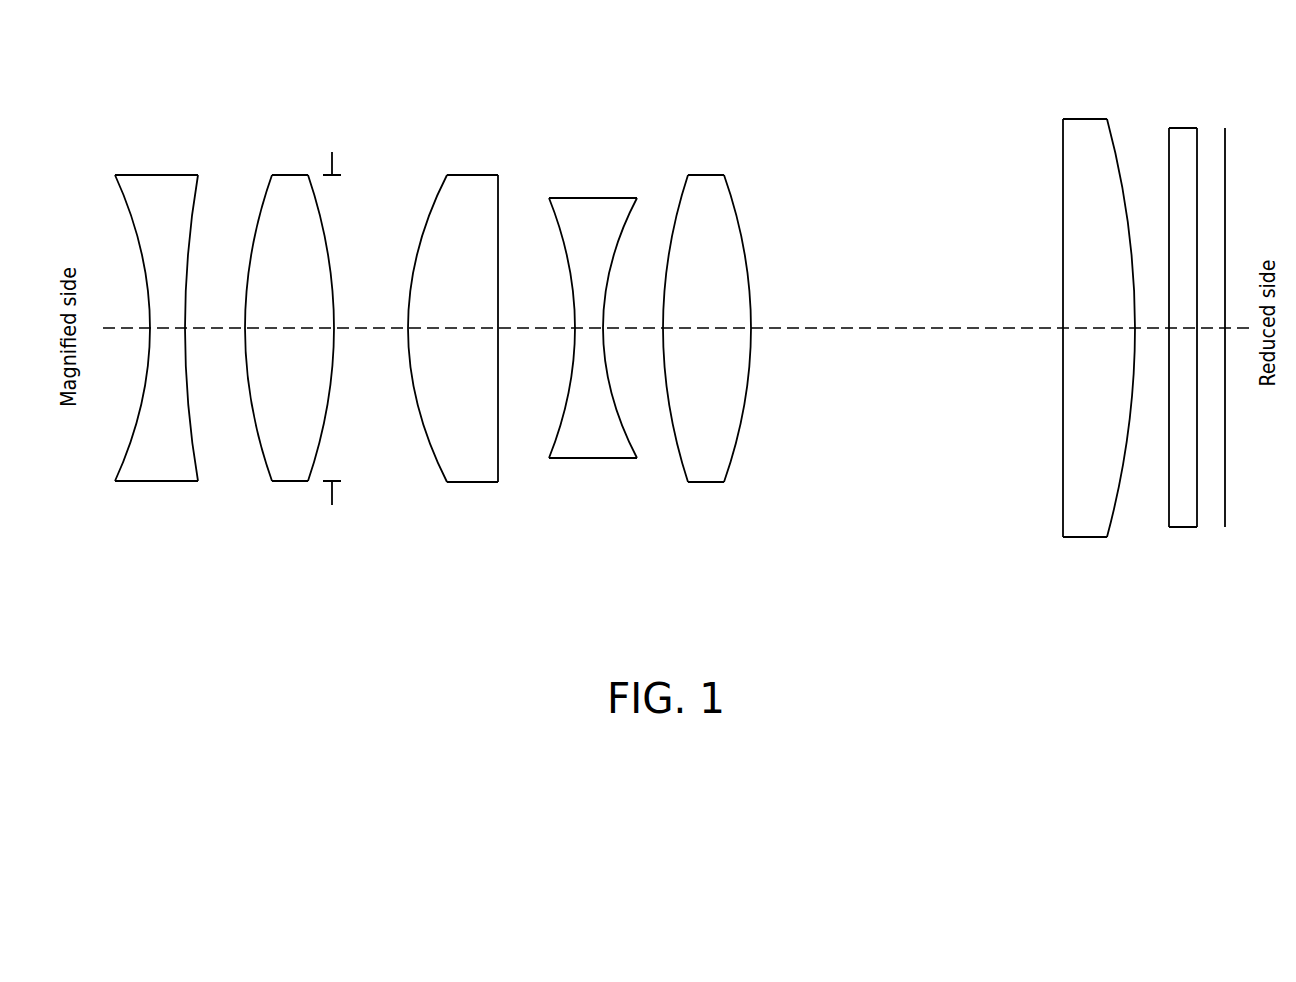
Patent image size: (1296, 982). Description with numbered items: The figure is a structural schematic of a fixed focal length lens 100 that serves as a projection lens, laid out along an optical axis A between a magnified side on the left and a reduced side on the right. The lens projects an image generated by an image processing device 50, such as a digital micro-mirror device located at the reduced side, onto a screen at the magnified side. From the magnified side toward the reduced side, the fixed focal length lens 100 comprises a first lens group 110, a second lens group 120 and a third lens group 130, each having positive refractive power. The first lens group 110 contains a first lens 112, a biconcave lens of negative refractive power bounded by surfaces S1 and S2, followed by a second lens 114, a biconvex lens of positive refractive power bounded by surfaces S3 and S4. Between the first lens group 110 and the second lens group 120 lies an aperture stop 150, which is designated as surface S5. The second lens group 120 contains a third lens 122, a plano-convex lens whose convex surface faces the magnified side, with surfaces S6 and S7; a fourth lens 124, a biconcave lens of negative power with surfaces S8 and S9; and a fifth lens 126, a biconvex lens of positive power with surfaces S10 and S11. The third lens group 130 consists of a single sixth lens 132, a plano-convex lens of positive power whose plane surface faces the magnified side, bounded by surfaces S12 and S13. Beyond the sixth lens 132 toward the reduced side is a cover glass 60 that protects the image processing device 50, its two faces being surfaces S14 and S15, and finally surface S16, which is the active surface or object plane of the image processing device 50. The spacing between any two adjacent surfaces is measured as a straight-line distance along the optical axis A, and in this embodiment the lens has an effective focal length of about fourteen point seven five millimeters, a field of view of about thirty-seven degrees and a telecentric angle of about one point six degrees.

The fixed focal length lens 100 is at (1262, 668).
The first lens group 110 is at (305, 553).
The first lens 112 is at (165, 467).
The second lens 114 is at (300, 467).
The aperture stop 150 is at (333, 493).
The second lens group 120 is at (472, 553).
The third lens 122 is at (470, 467).
The fourth lens 124 is at (590, 448).
The fifth lens 126 is at (710, 465).
The third lens group 130 is at (1063, 606).
The sixth lens 132 is at (1080, 525).
The cover glass 60 is at (1180, 517).
The image processing device 50 is at (1227, 493).
The optical axis A is at (885, 328).
The surface S1 is at (127, 212).
The surface S2 is at (197, 208).
The surface S3 is at (264, 199).
The surface S4 is at (312, 197).
The surface S5 is at (334, 158).
The surface S6 is at (433, 212).
The surface S7 is at (500, 198).
The surface S8 is at (547, 233).
The surface S9 is at (631, 216).
The surface S10 is at (682, 202).
The surface S11 is at (731, 206).
The surface S12 is at (1062, 163).
The surface S13 is at (1112, 143).
The surface S14 is at (1158, 169).
The surface S15 is at (1198, 162).
The surface S16 is at (1223, 232).